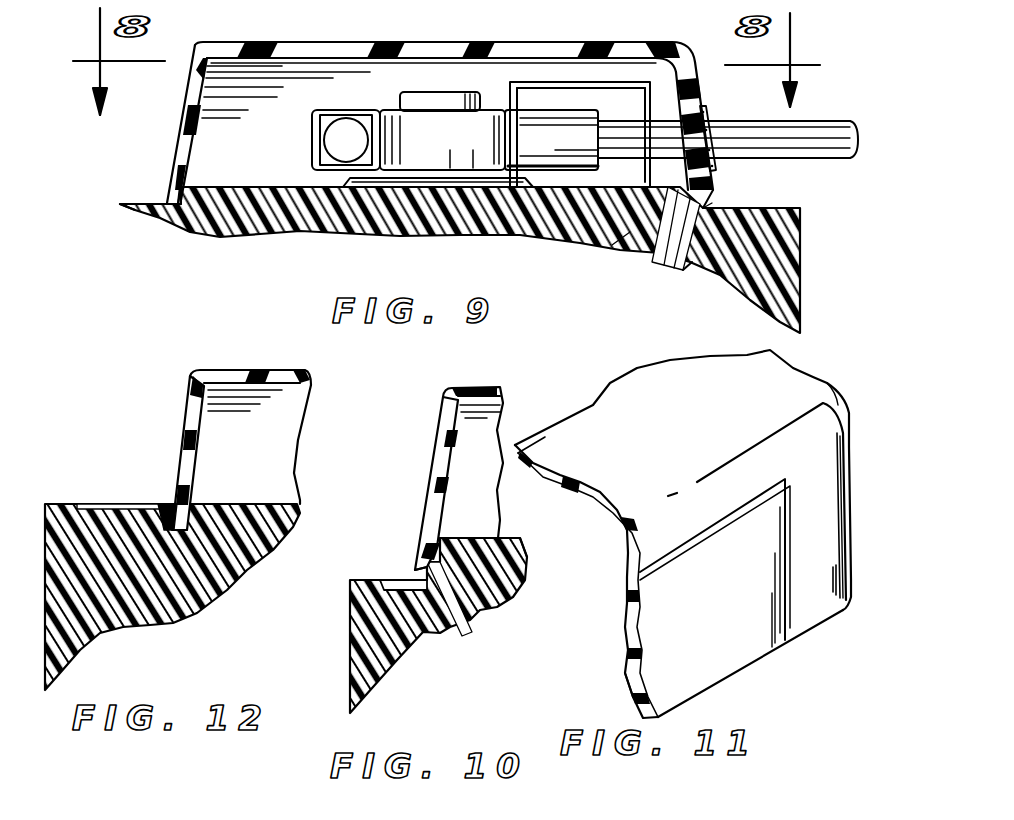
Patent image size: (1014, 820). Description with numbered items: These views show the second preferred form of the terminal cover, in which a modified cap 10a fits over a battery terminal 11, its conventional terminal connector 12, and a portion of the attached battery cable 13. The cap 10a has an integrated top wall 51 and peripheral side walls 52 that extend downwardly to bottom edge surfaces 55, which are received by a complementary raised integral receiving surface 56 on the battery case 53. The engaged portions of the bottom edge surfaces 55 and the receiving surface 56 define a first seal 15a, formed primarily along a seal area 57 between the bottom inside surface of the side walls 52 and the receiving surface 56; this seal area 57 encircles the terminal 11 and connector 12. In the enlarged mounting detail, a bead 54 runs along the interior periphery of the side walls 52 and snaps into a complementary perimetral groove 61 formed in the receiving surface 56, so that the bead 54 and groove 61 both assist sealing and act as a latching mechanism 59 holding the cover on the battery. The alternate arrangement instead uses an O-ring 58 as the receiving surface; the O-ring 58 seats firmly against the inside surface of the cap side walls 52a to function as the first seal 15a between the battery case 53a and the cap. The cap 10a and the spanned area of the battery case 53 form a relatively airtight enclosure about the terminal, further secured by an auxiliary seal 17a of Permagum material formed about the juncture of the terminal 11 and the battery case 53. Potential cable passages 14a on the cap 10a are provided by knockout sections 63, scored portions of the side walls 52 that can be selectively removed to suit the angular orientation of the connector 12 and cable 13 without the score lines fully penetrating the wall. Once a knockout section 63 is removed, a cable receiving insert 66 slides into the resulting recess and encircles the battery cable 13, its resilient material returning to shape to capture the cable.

In FIG. 9, the modified cap 10a is at (297, 32).
In FIG. 12, the modified cap 10a is at (214, 355).
In FIG. 10, the modified cap 10a is at (425, 425).
In FIG. 9, the battery terminal 11 is at (440, 92).
In FIG. 9, the terminal connector 12 is at (398, 133).
In FIG. 9, the battery cable 13 is at (820, 127).
In FIG. 11, the cable passage 14a is at (628, 650).
In FIG. 9, the first seal 15a is at (730, 190).
In FIG. 10, the first seal 15a is at (418, 520).
In FIG. 9, the auxiliary seal 17a is at (524, 164).
In FIG. 9, the top wall 51 is at (657, 45).
In FIG. 11, the top wall 51 is at (787, 380).
In FIG. 9, the side walls 52 is at (212, 82).
In FIG. 10, the side walls 52 is at (493, 425).
In FIG. 11, the side walls 52 is at (828, 520).
In FIG. 12, the cap side walls 52a is at (191, 392).
In FIG. 9, the battery case 53 is at (801, 293).
In FIG. 10, the battery case 53 is at (436, 625).
In FIG. 12, the base 53a is at (54, 525).
In FIG. 9, the bead 54 is at (184, 193).
In FIG. 10, the bead 54 is at (494, 607).
In FIG. 11, the bead 54 is at (625, 673).
In FIG. 9, the bottom edge surfaces 55 is at (181, 205).
In FIG. 10, the bottom edge surfaces 55 is at (410, 553).
In FIG. 11, the bottom edge surfaces 55 is at (812, 632).
In FIG. 9, the raised receiving surface 56 is at (150, 217).
In FIG. 10, the raised receiving surface 56 is at (440, 548).
In FIG. 9, the seal area 57 is at (170, 203).
In FIG. 10, the seal area 57 is at (417, 578).
In FIG. 12, the O-ring 58 is at (188, 507).
In FIG. 12, the latching mechanism 59 is at (157, 493).
In FIG. 9, the perimetral groove 61 is at (660, 247).
In FIG. 10, the perimetral groove 61 is at (458, 612).
In FIG. 9, the knockout section 63 is at (544, 92).
In FIG. 11, the knockout section 63 is at (740, 653).
In FIG. 9, the cable receiving insert 66 is at (708, 92).